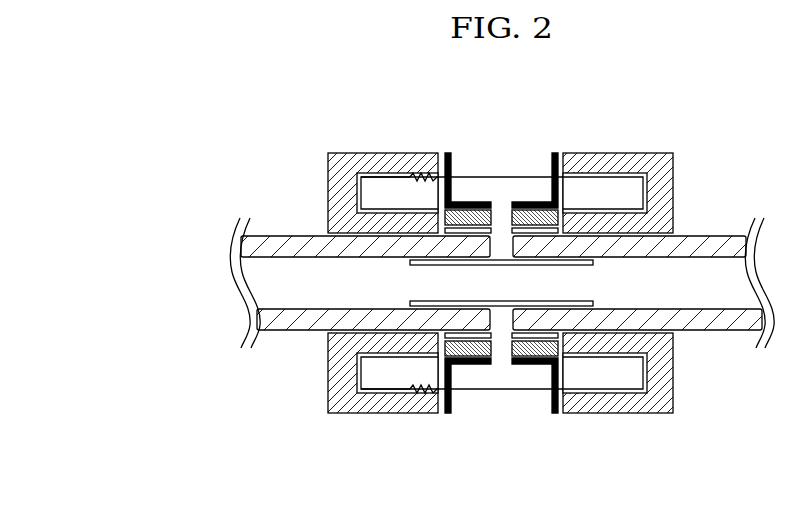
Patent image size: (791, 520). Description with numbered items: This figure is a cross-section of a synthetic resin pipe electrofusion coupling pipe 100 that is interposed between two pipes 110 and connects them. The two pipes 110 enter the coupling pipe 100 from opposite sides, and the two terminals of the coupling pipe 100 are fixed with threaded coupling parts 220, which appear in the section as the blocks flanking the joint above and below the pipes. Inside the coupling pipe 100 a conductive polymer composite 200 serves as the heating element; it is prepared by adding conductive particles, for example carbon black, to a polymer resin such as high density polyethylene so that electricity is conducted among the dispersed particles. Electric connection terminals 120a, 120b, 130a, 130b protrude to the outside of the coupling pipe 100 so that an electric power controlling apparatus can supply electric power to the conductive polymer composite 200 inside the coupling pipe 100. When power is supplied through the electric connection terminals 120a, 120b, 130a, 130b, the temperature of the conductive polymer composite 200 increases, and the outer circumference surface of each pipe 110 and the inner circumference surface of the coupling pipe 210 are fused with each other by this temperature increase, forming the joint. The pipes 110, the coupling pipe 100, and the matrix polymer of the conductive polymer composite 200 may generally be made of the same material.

The synthetic resin pipe electrofusion coupling pipe 100 is at (667, 140).
The pipe 110 is at (280, 242).
The electric connection terminal 120a is at (447, 152).
The electric connection terminal 120b is at (447, 413).
The electric connection terminal 130a is at (557, 152).
The electric connection terminal 130b is at (556, 413).
The conductive polymer composite 200 is at (481, 207).
The inner circumference surface of the coupling pipe 210 is at (465, 229).
The threaded coupling part 220 is at (368, 152).